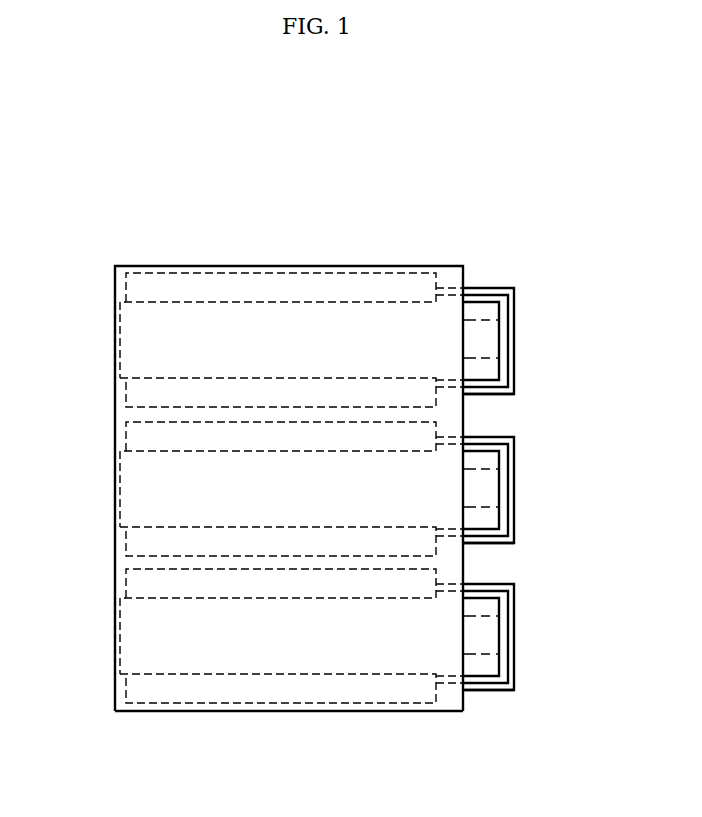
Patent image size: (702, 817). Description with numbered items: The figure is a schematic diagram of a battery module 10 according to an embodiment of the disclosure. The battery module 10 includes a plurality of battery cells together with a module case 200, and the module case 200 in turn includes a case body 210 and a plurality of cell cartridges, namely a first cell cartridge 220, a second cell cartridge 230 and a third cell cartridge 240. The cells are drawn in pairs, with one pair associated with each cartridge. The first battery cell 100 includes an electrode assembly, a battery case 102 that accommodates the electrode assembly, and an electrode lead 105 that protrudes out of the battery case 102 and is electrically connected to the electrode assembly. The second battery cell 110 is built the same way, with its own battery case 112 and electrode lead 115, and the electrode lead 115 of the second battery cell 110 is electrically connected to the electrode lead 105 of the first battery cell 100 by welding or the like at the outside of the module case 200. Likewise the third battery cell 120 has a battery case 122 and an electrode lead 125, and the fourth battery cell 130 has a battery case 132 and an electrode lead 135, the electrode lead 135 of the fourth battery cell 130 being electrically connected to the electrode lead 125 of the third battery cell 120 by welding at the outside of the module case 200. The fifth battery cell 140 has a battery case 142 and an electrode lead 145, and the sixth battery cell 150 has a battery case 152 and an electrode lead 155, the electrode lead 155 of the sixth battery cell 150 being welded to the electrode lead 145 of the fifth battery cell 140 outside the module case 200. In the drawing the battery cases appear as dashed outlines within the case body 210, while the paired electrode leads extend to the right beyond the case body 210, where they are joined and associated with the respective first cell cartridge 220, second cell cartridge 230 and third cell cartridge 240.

The battery module 10 is at (79, 238).
The module case 200 is at (266, 729).
The case body 210 is at (357, 712).
The first battery cell 100 is at (511, 283).
The battery case 102 is at (127, 283).
The battery case 112 is at (127, 391).
The electrode lead 105 is at (509, 310).
The electrode lead 115 is at (514, 335).
The first cell cartridge 220 is at (491, 360).
The second battery cell 110 is at (511, 394).
The third battery cell 120 is at (511, 432).
The battery case 122 is at (127, 435).
The battery case 132 is at (127, 538).
The electrode lead 125 is at (509, 459).
The electrode lead 135 is at (514, 484).
The second cell cartridge 230 is at (491, 506).
The fourth battery cell 130 is at (511, 544).
The fifth battery cell 140 is at (511, 580).
The battery case 142 is at (127, 580).
The battery case 152 is at (127, 685).
The electrode lead 145 is at (509, 605).
The electrode lead 155 is at (514, 632).
The third cell cartridge 240 is at (491, 655).
The sixth battery cell 150 is at (511, 691).